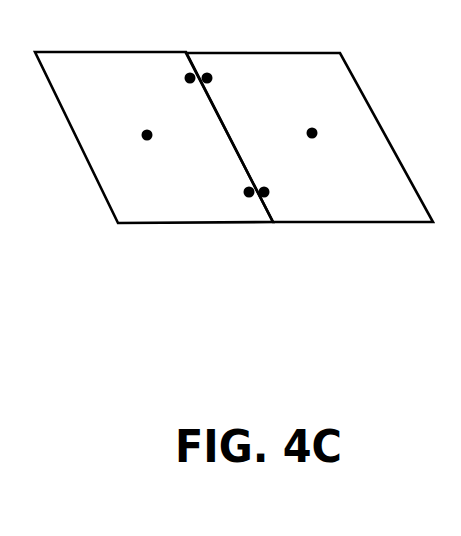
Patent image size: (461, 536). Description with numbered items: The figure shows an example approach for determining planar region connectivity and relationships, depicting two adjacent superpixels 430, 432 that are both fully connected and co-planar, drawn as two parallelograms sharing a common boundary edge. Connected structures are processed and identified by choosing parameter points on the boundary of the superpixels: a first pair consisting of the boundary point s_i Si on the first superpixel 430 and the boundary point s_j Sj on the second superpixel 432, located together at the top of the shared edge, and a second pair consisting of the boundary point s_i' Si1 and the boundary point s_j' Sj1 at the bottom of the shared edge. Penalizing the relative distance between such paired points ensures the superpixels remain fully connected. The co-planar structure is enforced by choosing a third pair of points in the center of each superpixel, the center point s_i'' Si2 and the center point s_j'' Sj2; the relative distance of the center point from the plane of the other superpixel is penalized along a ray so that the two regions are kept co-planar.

The superpixel 430 is at (122, 50).
The superpixel 432 is at (275, 50).
The boundary point s_i Si is at (171, 81).
The boundary point s_j Sj is at (227, 81).
The center point s_i'' Si2 is at (130, 112).
The center point s_j'' Sj2 is at (360, 112).
The boundary point s_i' Si1 is at (229, 170).
The boundary point s_j' Sj1 is at (304, 165).